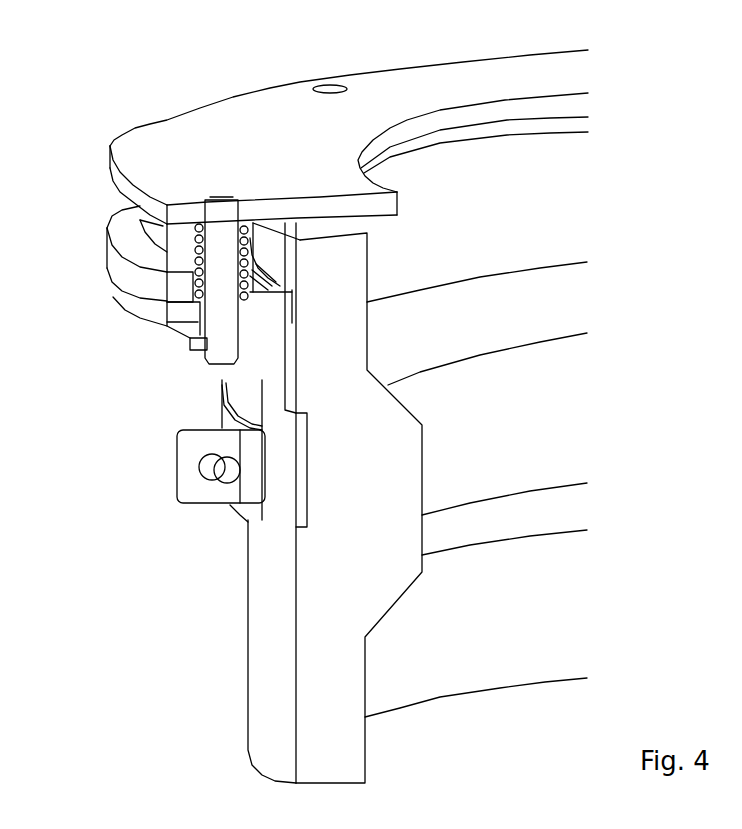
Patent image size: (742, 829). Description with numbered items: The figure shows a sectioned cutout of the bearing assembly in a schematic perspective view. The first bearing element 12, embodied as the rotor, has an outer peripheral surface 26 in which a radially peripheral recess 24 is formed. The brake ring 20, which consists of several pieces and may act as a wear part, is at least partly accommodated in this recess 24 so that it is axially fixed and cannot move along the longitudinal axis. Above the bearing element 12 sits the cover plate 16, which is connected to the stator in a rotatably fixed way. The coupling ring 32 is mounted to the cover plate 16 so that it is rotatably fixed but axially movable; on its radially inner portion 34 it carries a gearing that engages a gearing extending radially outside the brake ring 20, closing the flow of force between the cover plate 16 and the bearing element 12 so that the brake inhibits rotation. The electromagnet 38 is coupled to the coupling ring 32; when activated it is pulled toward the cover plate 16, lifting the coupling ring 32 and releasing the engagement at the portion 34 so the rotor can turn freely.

The first bearing element 12 is at (335, 688).
The cover plate 16 is at (210, 120).
The brake ring 20 is at (267, 517).
The radially peripheral recess 24 is at (316, 485).
The outer peripheral surface 26 is at (208, 467).
The coupling ring 32 is at (180, 313).
The portion 34 is at (276, 273).
The electromagnet 38 is at (128, 263).